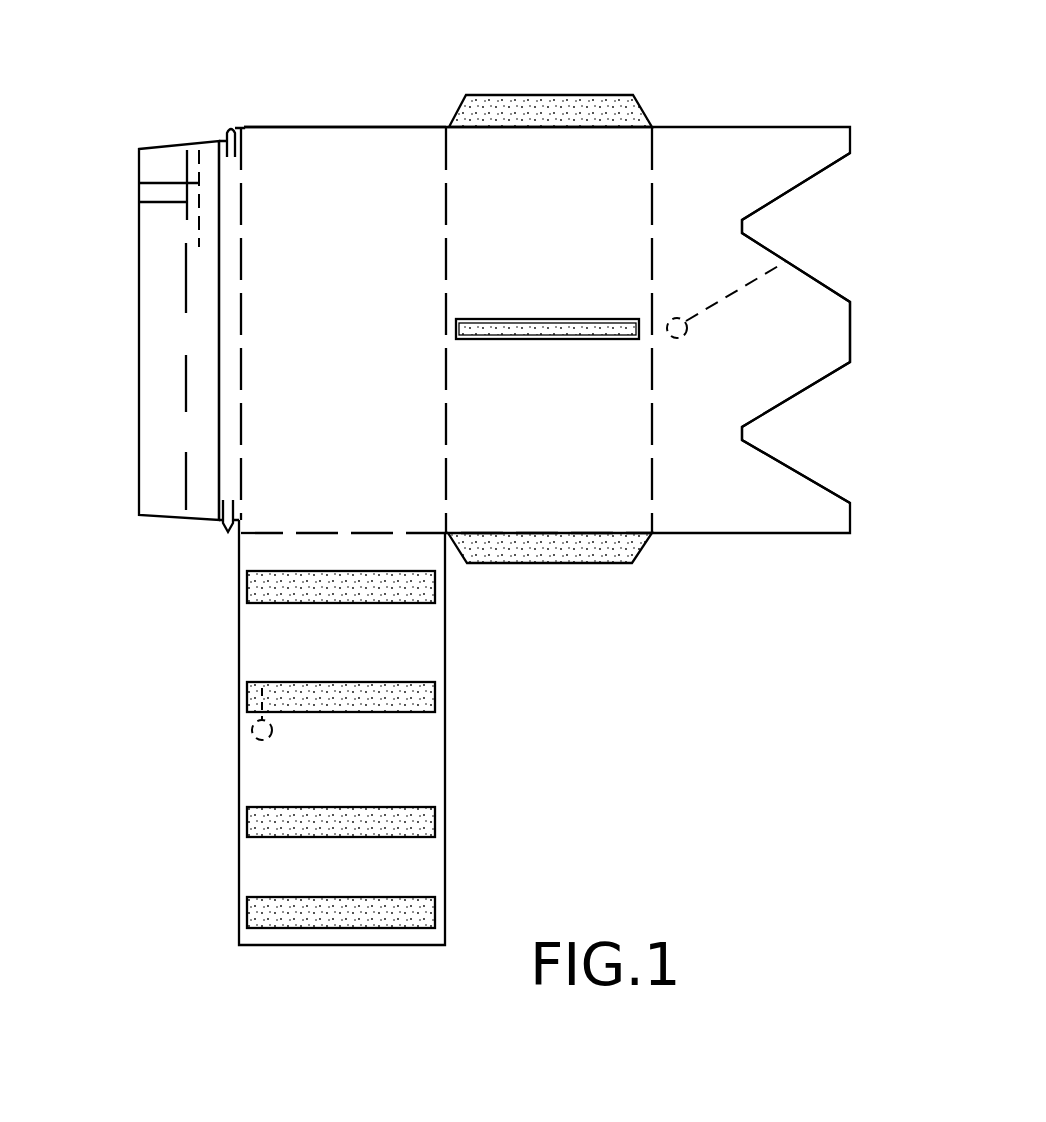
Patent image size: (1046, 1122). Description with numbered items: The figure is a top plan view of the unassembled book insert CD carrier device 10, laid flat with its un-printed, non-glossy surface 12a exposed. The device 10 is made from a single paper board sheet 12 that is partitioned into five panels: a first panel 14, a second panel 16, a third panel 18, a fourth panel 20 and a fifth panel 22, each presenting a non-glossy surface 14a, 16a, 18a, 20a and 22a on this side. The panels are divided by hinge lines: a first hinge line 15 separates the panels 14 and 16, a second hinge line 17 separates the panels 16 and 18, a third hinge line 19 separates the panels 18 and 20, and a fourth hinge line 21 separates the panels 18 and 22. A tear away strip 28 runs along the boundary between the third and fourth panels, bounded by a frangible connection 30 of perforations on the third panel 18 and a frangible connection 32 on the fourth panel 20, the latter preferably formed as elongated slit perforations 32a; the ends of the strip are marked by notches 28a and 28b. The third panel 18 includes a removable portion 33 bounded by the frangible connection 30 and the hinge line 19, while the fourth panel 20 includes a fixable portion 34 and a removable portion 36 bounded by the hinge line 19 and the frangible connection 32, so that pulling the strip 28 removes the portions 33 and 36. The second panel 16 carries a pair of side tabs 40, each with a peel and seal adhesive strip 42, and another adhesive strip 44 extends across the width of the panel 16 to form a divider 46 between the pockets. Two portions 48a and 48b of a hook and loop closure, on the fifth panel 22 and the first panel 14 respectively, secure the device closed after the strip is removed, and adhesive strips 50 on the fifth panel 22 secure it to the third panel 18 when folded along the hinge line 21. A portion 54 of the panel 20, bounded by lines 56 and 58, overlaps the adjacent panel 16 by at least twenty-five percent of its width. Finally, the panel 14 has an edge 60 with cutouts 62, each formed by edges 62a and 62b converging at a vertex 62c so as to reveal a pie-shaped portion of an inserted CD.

The book insert CD carrier device 10 is at (605, 718).
The paper board sheet 12 is at (446, 660).
The non-glossy surface 12a is at (571, 497).
The first panel 14 is at (760, 363).
The non-glossy surface of the first panel 14a is at (719, 261).
The first hinge line 15 is at (653, 456).
The second panel 16 is at (565, 406).
The non-glossy surface of the second panel 16a is at (571, 183).
The second hinge line 17 is at (447, 455).
The third panel 18 is at (367, 363).
The non-glossy surface of the third panel 18a is at (373, 204).
The third hinge line 19 is at (219, 406).
The fourth panel 20 is at (192, 354).
The non-glossy surface of the fourth panel 20a is at (163, 449).
The fourth hinge line 21 is at (350, 533).
The fifth panel 22 is at (355, 763).
The non-glossy surface of the fifth panel 22a is at (274, 878).
The tear away strip 28 is at (232, 183).
The upper notch 28a is at (231, 130).
The lower notch 28b is at (228, 530).
The frangible connection 30 is at (242, 309).
The frangible connection 32 is at (185, 292).
The elongated slit perforations 32a is at (187, 243).
The removable portion 33 is at (230, 226).
The fixable portion 34 is at (158, 500).
The removable portion 36 is at (202, 502).
The side tabs 40 is at (576, 96).
The adhesive strip 42 is at (512, 108).
The adhesive strip 44 is at (547, 322).
The divider 46 is at (491, 329).
The hook and loop closure portion 48a is at (263, 684).
The hook and loop closure portion 48b is at (784, 264).
The adhesive strips 50 is at (355, 682).
The overlapping portion 54 is at (164, 190).
The line 56 is at (198, 170).
The line 58 is at (139, 222).
The edge 60 is at (852, 327).
The cutout 62 is at (812, 182).
The cutout edge 62a is at (833, 290).
The cutout edge 62b is at (795, 182).
The vertex 62c is at (742, 218).